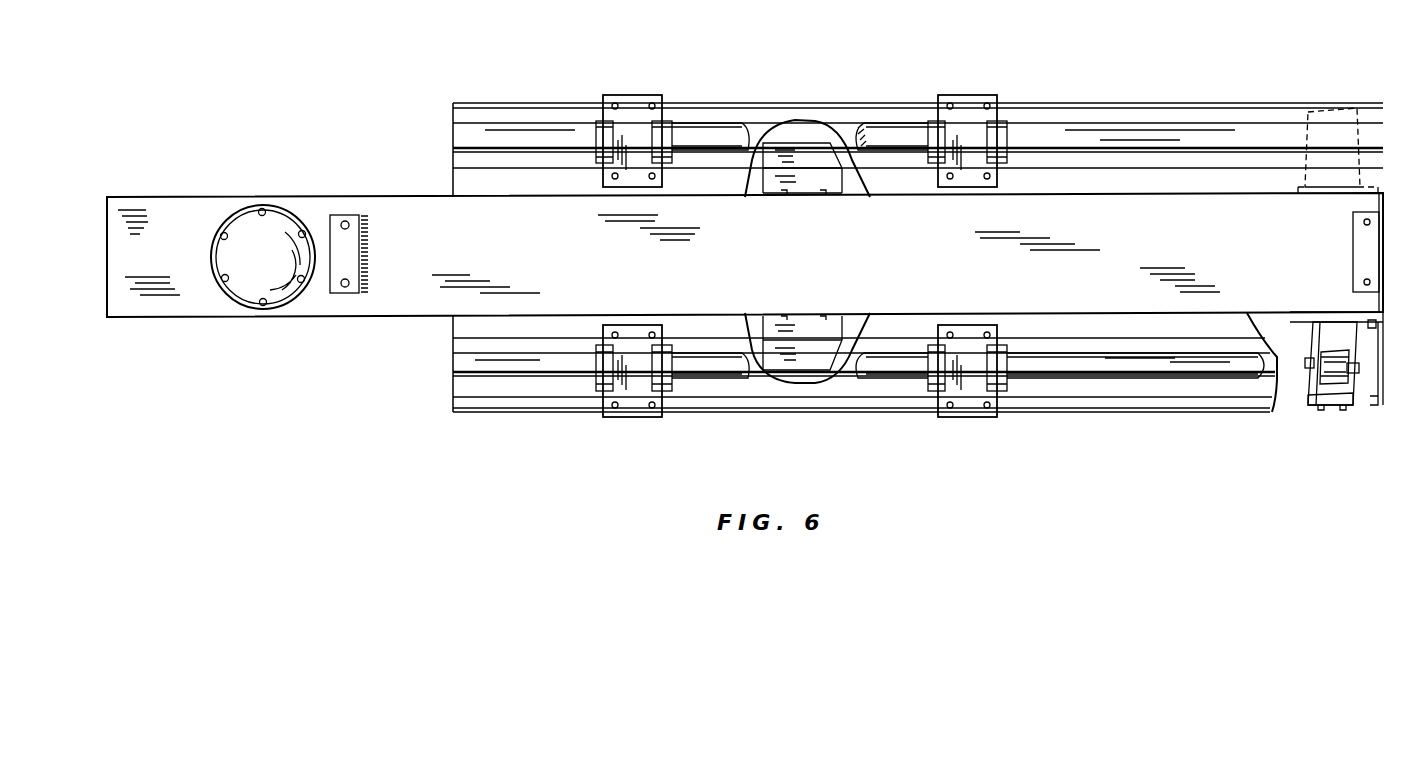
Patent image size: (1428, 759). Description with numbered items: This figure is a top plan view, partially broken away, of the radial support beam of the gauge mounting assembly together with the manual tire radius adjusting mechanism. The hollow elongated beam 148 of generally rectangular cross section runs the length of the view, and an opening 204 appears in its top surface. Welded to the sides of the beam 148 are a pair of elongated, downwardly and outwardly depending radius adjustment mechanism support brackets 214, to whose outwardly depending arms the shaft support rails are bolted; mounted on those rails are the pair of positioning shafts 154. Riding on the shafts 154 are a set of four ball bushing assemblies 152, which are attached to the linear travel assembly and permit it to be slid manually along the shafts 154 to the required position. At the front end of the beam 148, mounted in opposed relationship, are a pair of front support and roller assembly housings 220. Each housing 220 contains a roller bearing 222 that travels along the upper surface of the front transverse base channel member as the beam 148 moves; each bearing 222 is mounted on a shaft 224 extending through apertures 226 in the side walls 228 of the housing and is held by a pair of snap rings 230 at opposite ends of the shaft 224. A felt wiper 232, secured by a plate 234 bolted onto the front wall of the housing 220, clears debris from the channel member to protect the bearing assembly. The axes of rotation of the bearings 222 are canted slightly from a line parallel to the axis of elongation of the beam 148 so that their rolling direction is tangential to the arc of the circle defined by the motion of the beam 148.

The hollow elongated beam 148 is at (160, 317).
The circular opening 204 is at (215, 240).
The shafts 154 is at (458, 133).
The radius adjustment mechanism support brackets 214 is at (1045, 98).
The ball bushing assemblies 152 is at (598, 117).
The front support and roller assembly housings 220 is at (1326, 248).
The roller bearings 222 is at (1347, 387).
The shaft 224 is at (1306, 364).
The apertures 226 is at (1313, 348).
The side walls 228 is at (1311, 318).
The snap rings 230 is at (1306, 392).
The felt wiper 232 is at (1335, 405).
The plate 234 is at (1349, 410).